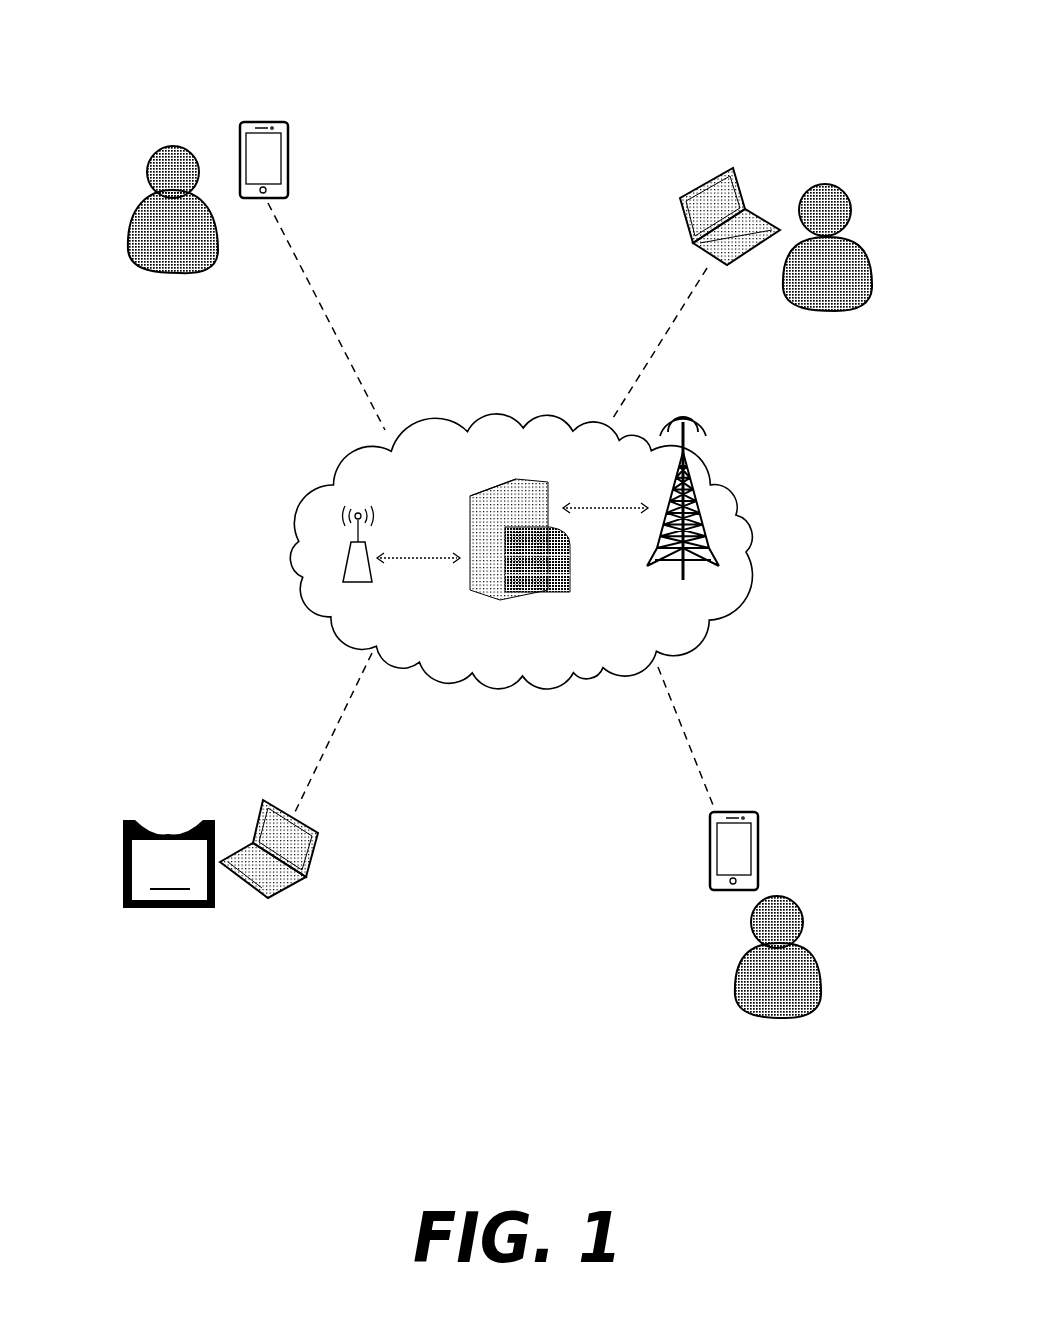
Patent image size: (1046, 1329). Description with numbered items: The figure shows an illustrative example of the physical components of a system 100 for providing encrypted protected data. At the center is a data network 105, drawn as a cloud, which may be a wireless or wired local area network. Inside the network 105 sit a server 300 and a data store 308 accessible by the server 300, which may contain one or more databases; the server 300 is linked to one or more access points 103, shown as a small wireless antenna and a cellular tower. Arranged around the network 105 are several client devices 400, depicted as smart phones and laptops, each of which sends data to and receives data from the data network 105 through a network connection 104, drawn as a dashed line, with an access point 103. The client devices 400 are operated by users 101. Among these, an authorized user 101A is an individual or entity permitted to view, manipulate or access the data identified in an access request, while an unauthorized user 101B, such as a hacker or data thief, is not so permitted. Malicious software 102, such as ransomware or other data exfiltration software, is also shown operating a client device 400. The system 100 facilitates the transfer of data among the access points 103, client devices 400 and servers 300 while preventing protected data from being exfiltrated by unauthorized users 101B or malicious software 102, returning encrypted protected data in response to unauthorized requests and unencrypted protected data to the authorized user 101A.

The system 100 is at (703, 90).
The user 101 is at (802, 907).
The authorized user 101A is at (150, 163).
The unauthorized user 101B is at (860, 230).
The malicious software 102 is at (169, 864).
The access point 103 is at (660, 487).
The network connection 104 is at (345, 355).
The data network 105 is at (370, 448).
The server 300 is at (485, 522).
The data store 308 is at (543, 578).
The client device 400 is at (289, 148).